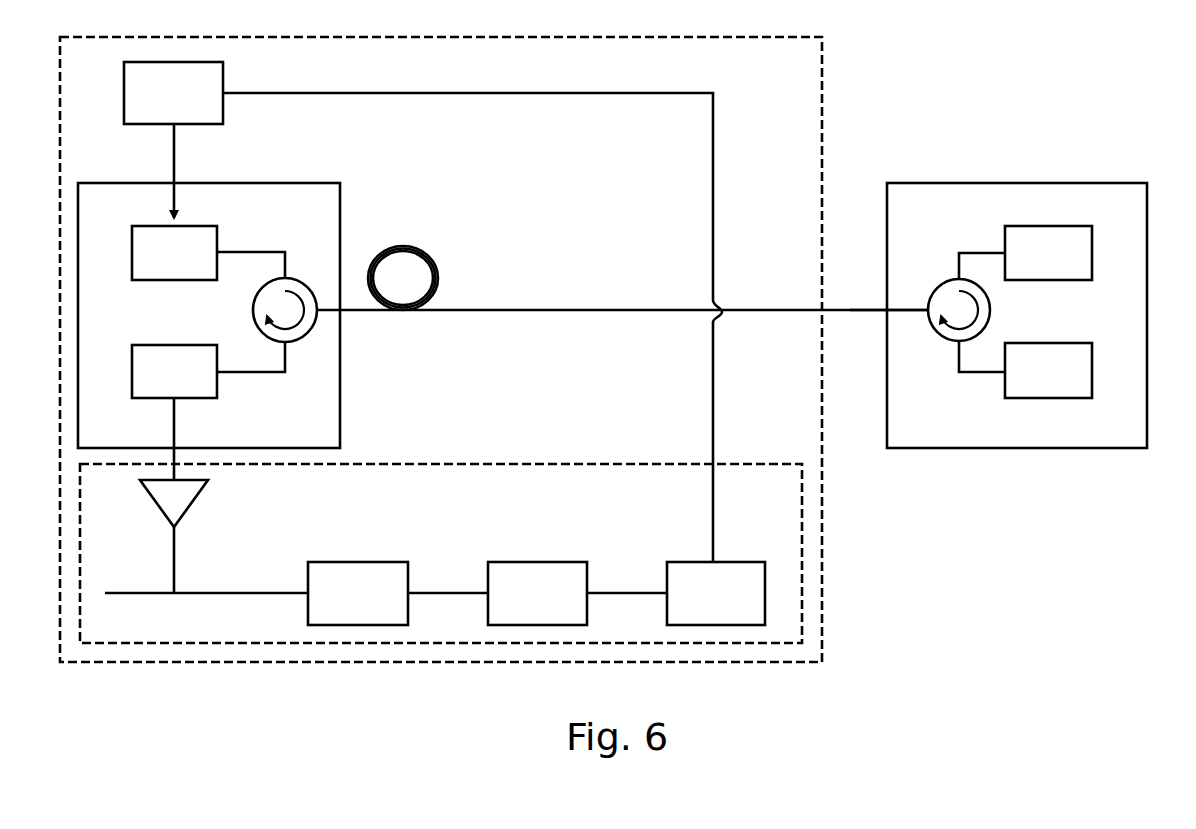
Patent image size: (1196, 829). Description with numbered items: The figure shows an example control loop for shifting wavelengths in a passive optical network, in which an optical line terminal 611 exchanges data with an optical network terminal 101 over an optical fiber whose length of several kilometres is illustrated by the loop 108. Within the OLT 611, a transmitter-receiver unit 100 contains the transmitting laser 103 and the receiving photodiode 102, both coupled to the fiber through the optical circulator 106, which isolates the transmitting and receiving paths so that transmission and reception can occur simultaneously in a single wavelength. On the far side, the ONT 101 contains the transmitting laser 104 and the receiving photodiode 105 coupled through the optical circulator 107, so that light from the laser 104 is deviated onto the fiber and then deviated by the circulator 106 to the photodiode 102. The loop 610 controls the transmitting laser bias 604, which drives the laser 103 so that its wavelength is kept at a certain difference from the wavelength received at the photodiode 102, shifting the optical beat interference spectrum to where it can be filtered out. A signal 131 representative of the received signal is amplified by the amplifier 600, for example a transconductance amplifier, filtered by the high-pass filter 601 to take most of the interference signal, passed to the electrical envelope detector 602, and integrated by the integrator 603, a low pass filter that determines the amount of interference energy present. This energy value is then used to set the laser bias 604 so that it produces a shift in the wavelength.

The optical line terminal 100 is at (90, 447).
The optical network terminal 101 is at (1108, 448).
The photodiode 102 is at (208, 370).
The laser 103 is at (208, 253).
The laser 104 is at (1025, 253).
The photodiode 105 is at (1025, 369).
The optical circulator 106 is at (258, 328).
The optical circulator 107 is at (990, 300).
The loop 108 is at (404, 234).
The wire 131 is at (176, 410).
The amplifier 600 is at (196, 498).
The high-pass filter 601 is at (398, 593).
The electrical envelope detector 602 is at (577, 593).
The integrator 603 is at (716, 593).
The transmitting laser bias 604 is at (423, 312).
The loop 610 is at (616, 464).
The optical line terminal 611 is at (820, 37).